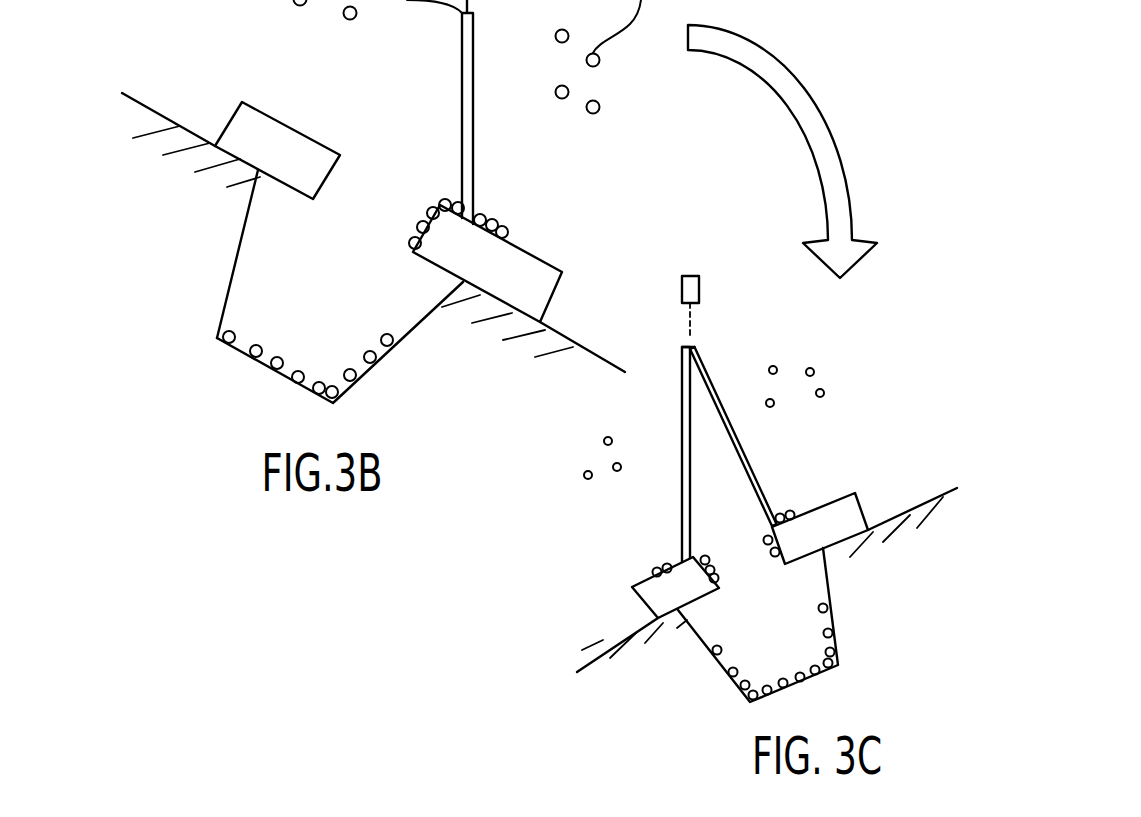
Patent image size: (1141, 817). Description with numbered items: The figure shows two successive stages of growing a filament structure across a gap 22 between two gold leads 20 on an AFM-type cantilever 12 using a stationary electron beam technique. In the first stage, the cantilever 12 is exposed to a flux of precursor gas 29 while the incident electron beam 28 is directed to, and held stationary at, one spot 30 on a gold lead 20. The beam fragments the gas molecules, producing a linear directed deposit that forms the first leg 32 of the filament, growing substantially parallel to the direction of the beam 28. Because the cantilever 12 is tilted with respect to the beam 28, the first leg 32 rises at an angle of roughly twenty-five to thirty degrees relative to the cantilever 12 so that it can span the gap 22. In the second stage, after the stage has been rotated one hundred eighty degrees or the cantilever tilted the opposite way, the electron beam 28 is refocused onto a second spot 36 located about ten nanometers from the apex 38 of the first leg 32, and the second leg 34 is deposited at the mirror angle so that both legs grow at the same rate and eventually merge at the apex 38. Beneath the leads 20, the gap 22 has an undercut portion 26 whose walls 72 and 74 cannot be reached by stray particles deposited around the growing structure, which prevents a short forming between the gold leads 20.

In FIG. 3B, the cantilever 12 is at (192, 192).
In FIG. 3C, the cantilever 12 is at (867, 545).
In FIG. 3B, the gold lead 20 is at (238, 122).
In FIG. 3C, the gold lead 20 is at (857, 512).
In FIG. 3B, the gap 22 is at (368, 190).
In FIG. 3C, the gap 22 is at (740, 565).
In FIG. 3B, the undercut portion 26 is at (247, 310).
In FIG. 3C, the undercut portion 26 is at (787, 628).
In FIG. 3C, the electron beam 28 is at (690, 335).
In FIG. 3C, the precursor gas 29 is at (813, 370).
In FIG. 3B, the spot 30 is at (468, 225).
In FIG. 3C, the spot 30 is at (782, 528).
In FIG. 3B, the first leg 32 is at (475, 110).
In FIG. 3C, the first leg 32 is at (762, 500).
In FIG. 3C, the second leg 34 is at (682, 454).
In FIG. 3C, the second spot 36 is at (685, 567).
In FIG. 3C, the apex 38 is at (703, 372).
In FIG. 3B, the wall 72 is at (285, 185).
In FIG. 3B, the wall 74 is at (432, 263).